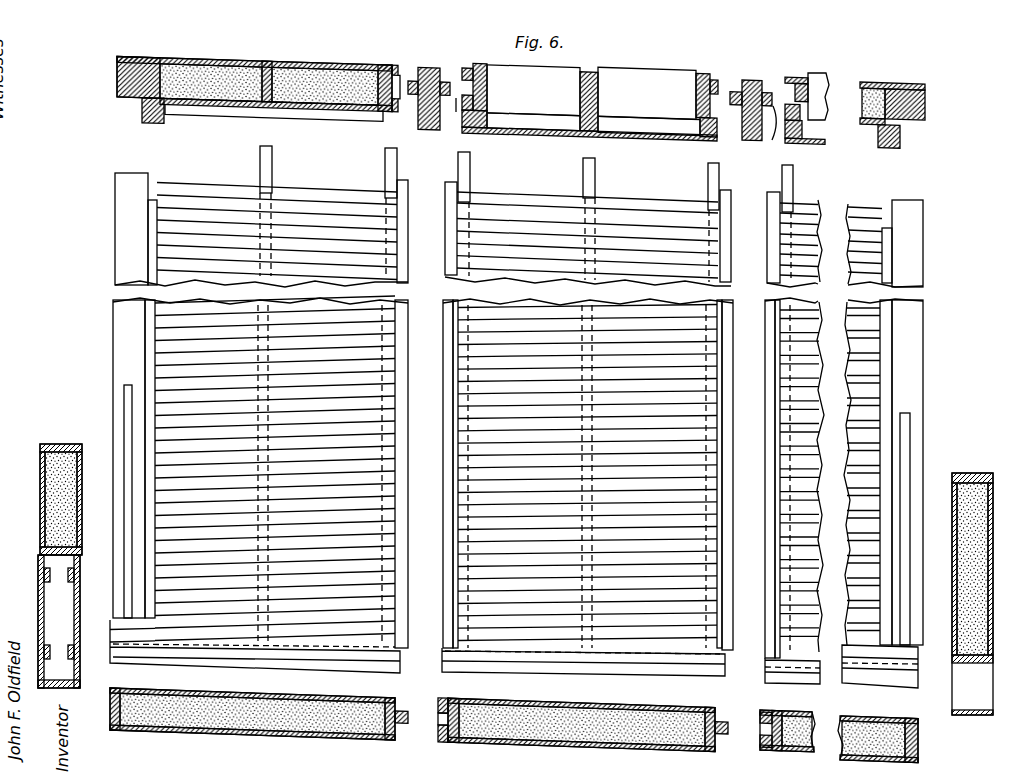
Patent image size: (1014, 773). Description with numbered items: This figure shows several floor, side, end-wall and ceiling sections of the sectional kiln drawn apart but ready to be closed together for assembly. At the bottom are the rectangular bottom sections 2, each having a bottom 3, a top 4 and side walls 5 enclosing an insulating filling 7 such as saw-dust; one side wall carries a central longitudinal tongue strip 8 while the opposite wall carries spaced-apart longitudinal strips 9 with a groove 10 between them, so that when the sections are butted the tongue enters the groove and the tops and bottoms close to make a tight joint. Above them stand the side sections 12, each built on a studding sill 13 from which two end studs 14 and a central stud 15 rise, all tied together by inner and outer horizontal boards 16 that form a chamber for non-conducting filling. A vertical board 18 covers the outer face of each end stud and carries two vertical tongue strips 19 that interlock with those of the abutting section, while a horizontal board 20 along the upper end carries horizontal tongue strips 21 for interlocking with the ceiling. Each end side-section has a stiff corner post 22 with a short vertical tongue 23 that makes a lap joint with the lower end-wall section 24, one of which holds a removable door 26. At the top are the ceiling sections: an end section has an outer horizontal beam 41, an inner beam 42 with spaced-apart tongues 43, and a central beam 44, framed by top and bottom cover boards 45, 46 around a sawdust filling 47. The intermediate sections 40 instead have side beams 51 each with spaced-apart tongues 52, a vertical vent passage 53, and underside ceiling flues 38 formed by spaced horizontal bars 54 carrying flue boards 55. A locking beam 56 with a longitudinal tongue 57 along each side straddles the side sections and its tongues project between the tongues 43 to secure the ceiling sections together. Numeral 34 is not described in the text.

The bottom section 2 is at (296, 738).
The bottom 3 is at (540, 744).
The top 4 is at (553, 706).
The side wall 5 is at (470, 707).
The filling 7 is at (610, 740).
The tongue strip 8 is at (732, 722).
The longitudinal strips 9 is at (440, 700).
The longitudinal groove 10 is at (436, 719).
The side section 12 is at (115, 234).
The studding sill 13 is at (270, 660).
The end stud 14 is at (385, 156).
The central stud 15 is at (260, 152).
The horizontal boards 16 is at (495, 474).
The vertical board 18 is at (457, 280).
The vertical tongue strips 19 is at (404, 390).
The horizontal board 20 is at (192, 193).
The horizontal tongue strips 21 is at (303, 190).
The corner post 22 is at (113, 332).
The vertical tongue 23 is at (124, 399).
The end-wall section 24 is at (40, 458).
The door 26 is at (58, 621).
The top bar 34 is at (212, 62).
The ceiling flue 38 is at (523, 128).
The intermediate section 40 is at (700, 72).
The horizontal beam 41 is at (116, 72).
The horizontal beam 42 is at (383, 64).
The spaced-apart tongues 43 is at (399, 73).
The central beam 44 is at (268, 64).
The top cover board 45 is at (324, 64).
The bottom cover board 46 is at (320, 113).
The filling 47 is at (243, 98).
The side beams 51 is at (478, 64).
The spaced-apart tongues 52 is at (465, 72).
The vent passage 53 is at (836, 74).
The horizontal bars 54 is at (472, 130).
The flue boards 55 is at (540, 132).
The locking beam 56 is at (428, 132).
The longitudinal tongue 57 is at (612, 128).